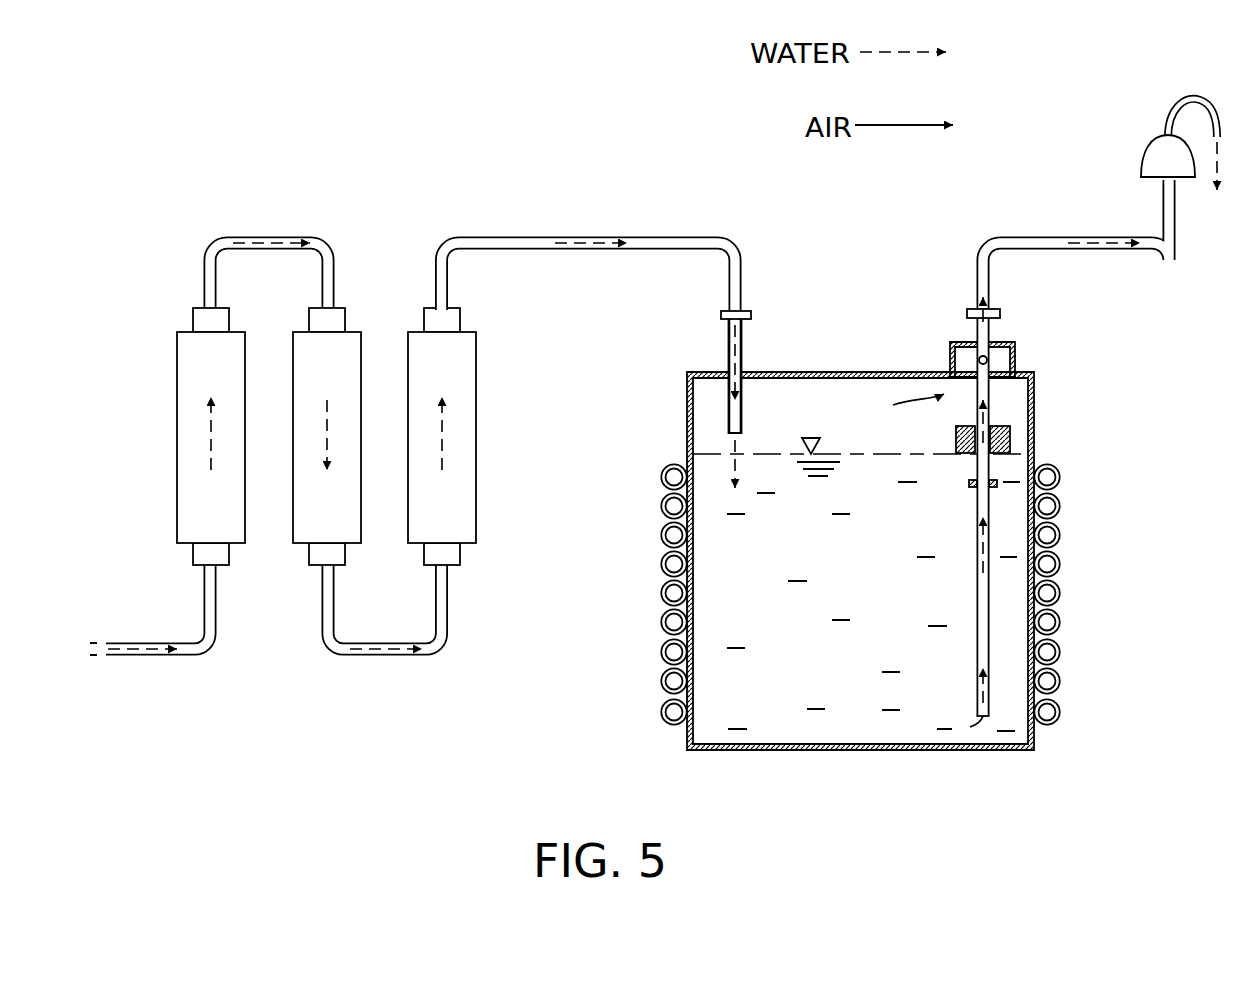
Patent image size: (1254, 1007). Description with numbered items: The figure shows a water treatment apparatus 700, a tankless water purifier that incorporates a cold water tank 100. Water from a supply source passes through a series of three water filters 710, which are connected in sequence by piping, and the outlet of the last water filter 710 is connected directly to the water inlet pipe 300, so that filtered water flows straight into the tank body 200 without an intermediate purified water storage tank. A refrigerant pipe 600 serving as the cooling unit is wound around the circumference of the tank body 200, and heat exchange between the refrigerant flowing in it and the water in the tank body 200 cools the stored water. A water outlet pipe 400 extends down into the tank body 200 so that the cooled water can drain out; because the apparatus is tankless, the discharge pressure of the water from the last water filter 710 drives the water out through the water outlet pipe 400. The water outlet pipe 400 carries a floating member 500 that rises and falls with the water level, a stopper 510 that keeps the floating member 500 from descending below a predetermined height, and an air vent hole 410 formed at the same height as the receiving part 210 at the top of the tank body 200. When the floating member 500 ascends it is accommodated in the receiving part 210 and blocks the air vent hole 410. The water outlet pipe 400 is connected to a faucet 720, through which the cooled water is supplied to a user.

The water treatment apparatus 700 is at (588, 132).
The water filter 710 is at (432, 410).
The cold water tank 100 is at (720, 338).
The water inlet pipe 300 is at (732, 357).
The tank body 200 is at (684, 420).
The receiving part 210 is at (950, 357).
The water outlet pipe 400 is at (989, 332).
The air vent hole 410 is at (988, 360).
The floating member 500 is at (1010, 437).
The stopper 510 is at (997, 483).
The refrigerant pipe 600 is at (1056, 596).
The faucet 720 is at (1165, 160).